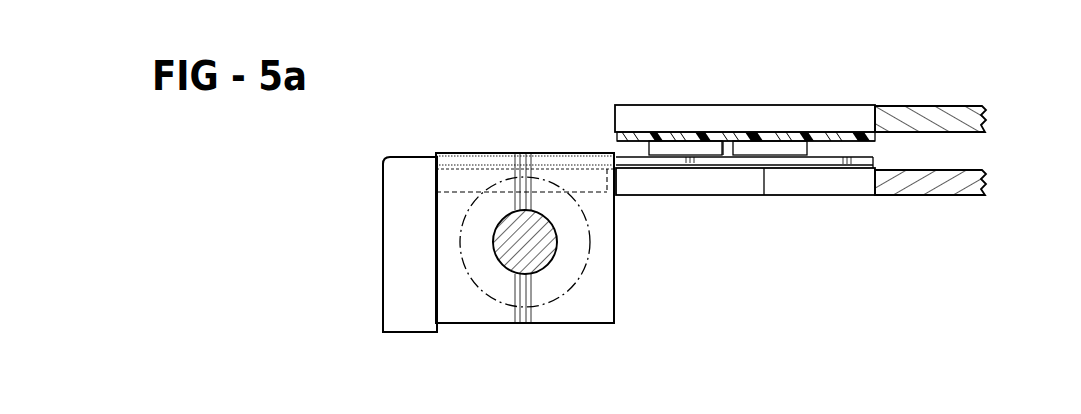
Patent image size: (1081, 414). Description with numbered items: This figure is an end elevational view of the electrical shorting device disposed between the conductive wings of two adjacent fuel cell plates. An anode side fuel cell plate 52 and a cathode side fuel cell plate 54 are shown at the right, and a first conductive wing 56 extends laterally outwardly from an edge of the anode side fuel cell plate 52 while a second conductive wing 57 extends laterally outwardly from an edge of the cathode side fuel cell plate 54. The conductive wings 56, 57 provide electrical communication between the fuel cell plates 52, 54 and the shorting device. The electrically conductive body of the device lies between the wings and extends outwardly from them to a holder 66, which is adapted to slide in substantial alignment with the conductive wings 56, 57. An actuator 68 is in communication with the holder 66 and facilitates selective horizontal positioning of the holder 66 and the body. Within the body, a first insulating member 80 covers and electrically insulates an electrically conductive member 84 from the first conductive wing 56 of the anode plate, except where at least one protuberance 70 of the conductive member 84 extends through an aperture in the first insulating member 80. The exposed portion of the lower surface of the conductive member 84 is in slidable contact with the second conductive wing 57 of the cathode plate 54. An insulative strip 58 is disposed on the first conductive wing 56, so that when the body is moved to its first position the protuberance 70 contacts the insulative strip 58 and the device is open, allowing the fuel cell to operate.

The anode side fuel cell plate 52 is at (945, 117).
The cathode side fuel cell plate 54 is at (983, 185).
The first conductive wing 56 is at (647, 117).
The second conductive wing 57 is at (672, 185).
The insulative strip 58 is at (876, 140).
The holder 66 is at (385, 237).
The actuator 68 is at (493, 308).
The protuberance 70 is at (690, 132).
The first insulating member 80 is at (628, 156).
The electrically conductive member 84 is at (764, 195).